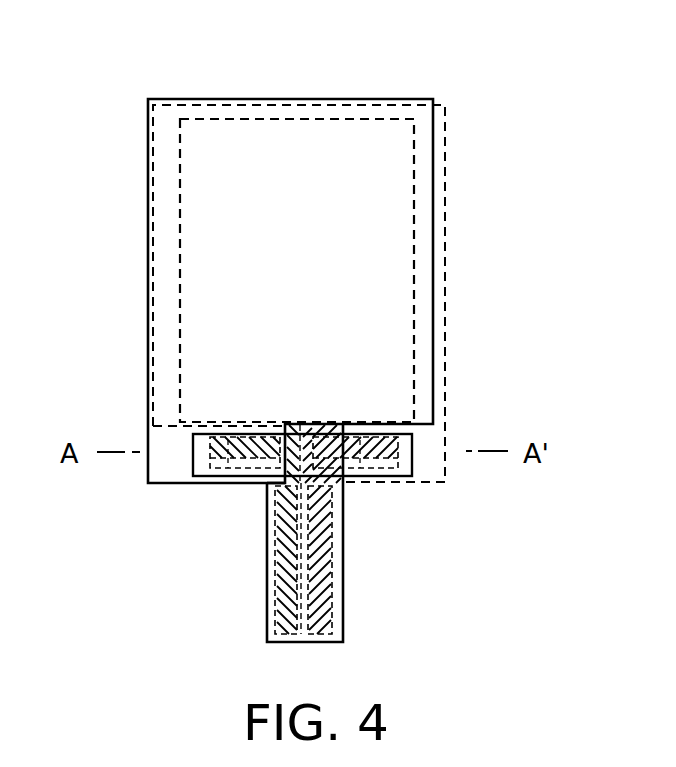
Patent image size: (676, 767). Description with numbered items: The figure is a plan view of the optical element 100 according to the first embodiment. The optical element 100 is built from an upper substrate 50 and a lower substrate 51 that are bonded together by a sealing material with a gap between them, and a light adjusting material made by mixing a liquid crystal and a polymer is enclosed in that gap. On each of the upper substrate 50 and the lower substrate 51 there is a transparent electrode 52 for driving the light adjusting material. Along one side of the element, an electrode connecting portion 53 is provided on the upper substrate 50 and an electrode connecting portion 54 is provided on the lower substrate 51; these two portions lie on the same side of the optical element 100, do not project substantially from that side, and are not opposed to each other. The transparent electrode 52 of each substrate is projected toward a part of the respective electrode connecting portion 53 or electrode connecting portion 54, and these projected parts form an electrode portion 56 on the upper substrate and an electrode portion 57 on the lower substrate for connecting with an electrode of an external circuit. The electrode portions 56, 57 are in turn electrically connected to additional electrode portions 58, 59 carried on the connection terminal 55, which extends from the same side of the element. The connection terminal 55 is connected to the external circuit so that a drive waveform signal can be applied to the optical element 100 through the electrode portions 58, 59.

The optical element 100 is at (500, 188).
The upper substrate 50 is at (147, 235).
The lower substrate 51 is at (446, 234).
The transparent electrode 52 is at (325, 118).
The electrode connecting portion 53 is at (166, 483).
The electrode connecting portion 54 is at (437, 483).
The connection terminal 55 is at (343, 580).
The electrode portion 56 is at (237, 462).
The electrode portion 57 is at (357, 470).
The electrode portion 58 is at (213, 455).
The electrode portion 59 is at (390, 470).